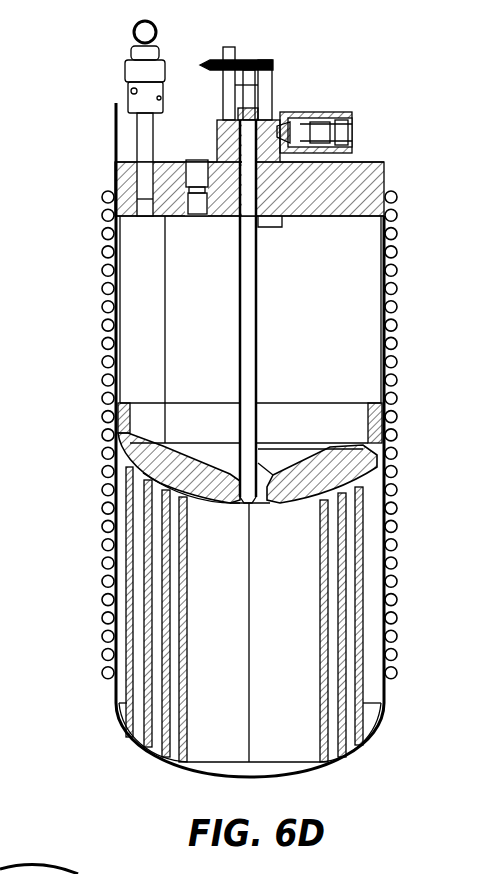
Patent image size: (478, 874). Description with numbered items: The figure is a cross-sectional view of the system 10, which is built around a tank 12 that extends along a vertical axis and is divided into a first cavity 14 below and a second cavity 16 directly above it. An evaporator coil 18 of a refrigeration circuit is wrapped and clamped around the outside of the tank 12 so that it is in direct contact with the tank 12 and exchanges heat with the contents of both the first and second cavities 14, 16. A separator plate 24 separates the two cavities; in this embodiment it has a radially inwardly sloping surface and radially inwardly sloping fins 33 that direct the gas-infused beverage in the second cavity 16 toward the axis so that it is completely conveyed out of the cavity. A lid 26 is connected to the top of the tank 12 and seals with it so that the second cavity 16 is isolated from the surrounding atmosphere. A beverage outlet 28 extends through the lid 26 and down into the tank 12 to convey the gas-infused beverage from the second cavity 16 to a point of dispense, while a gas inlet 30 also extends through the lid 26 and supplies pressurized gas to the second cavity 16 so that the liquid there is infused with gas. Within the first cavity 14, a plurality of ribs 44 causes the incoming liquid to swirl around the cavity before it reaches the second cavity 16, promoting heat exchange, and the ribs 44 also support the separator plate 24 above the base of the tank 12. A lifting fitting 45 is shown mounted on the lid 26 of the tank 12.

The system 10 is at (228, 398).
The tank 12 is at (385, 697).
The first cavity 14 is at (290, 637).
The second cavity 16 is at (352, 380).
The evaporator coil 18 is at (393, 437).
The separator plate 24 is at (225, 453).
The lid 26 is at (373, 175).
The beverage outlet 28 is at (250, 357).
The gas inlet 30 is at (197, 162).
The radially inwardly sloping fins 33 is at (230, 505).
The ribs 44 is at (47, 870).
The lifting eye bolt 45 is at (143, 133).